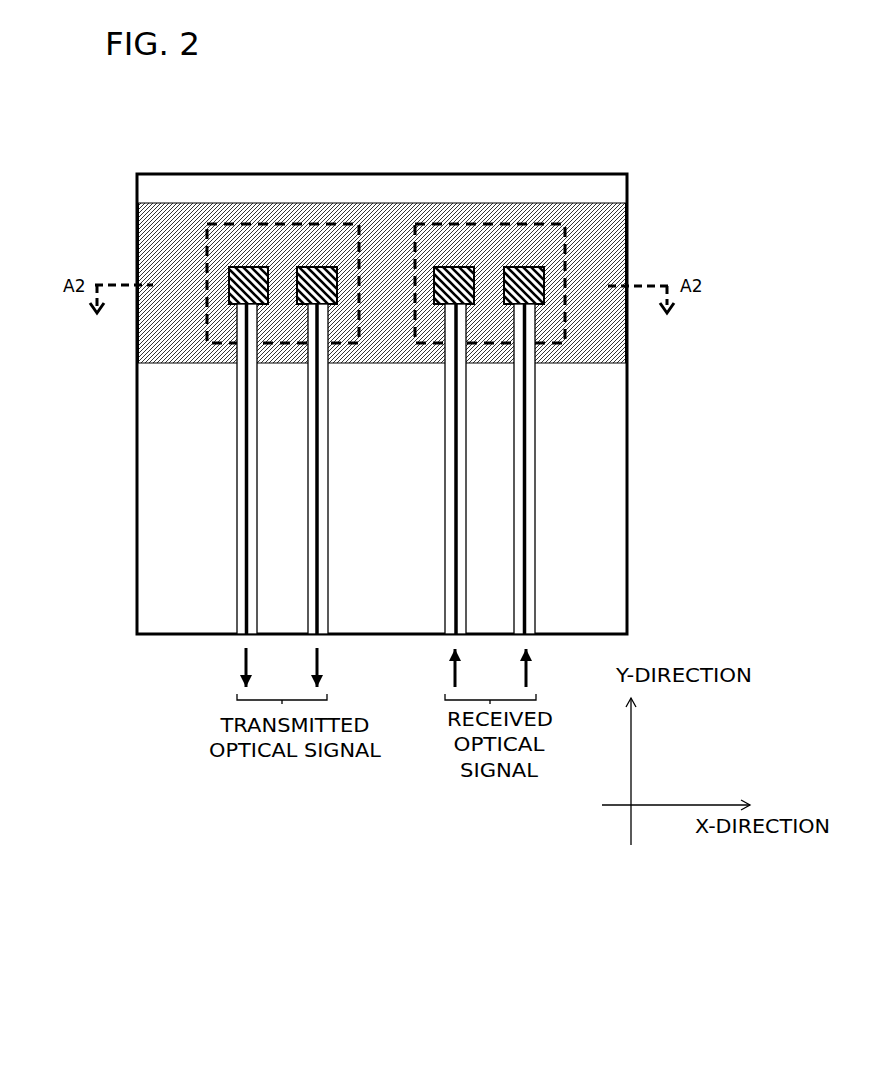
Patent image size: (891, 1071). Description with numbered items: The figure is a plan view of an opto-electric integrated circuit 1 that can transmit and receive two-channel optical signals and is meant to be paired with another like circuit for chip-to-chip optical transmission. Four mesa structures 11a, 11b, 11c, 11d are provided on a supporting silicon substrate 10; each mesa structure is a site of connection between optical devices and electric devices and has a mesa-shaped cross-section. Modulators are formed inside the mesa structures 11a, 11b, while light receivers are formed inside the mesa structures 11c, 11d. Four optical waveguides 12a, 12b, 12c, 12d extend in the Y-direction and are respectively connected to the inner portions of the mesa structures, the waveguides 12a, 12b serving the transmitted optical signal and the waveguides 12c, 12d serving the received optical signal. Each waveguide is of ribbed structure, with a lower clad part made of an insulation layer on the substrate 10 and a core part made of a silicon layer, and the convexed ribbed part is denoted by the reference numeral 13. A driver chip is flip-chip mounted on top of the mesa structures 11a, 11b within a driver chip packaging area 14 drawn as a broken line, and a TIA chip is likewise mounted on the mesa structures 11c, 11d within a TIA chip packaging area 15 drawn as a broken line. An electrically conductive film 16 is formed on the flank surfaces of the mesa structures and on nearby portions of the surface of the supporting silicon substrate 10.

The opto-electric integrated circuit 1 is at (630, 109).
The supporting silicon substrate 10 is at (607, 528).
The mesa structure 11a is at (245, 278).
The mesa structure 11b is at (315, 279).
The mesa structure 11c is at (453, 278).
The mesa structure 11d is at (522, 278).
The optical waveguide 12a is at (217, 469).
The optical waveguide 12b is at (332, 476).
The optical waveguide 12c is at (442, 542).
The optical waveguide 12d is at (538, 542).
The convexed part 13 is at (243, 544).
The driver chip packaging area 14 is at (203, 309).
The TIA chip packaging area 15 is at (572, 309).
The electrically conductive film 16 is at (586, 233).